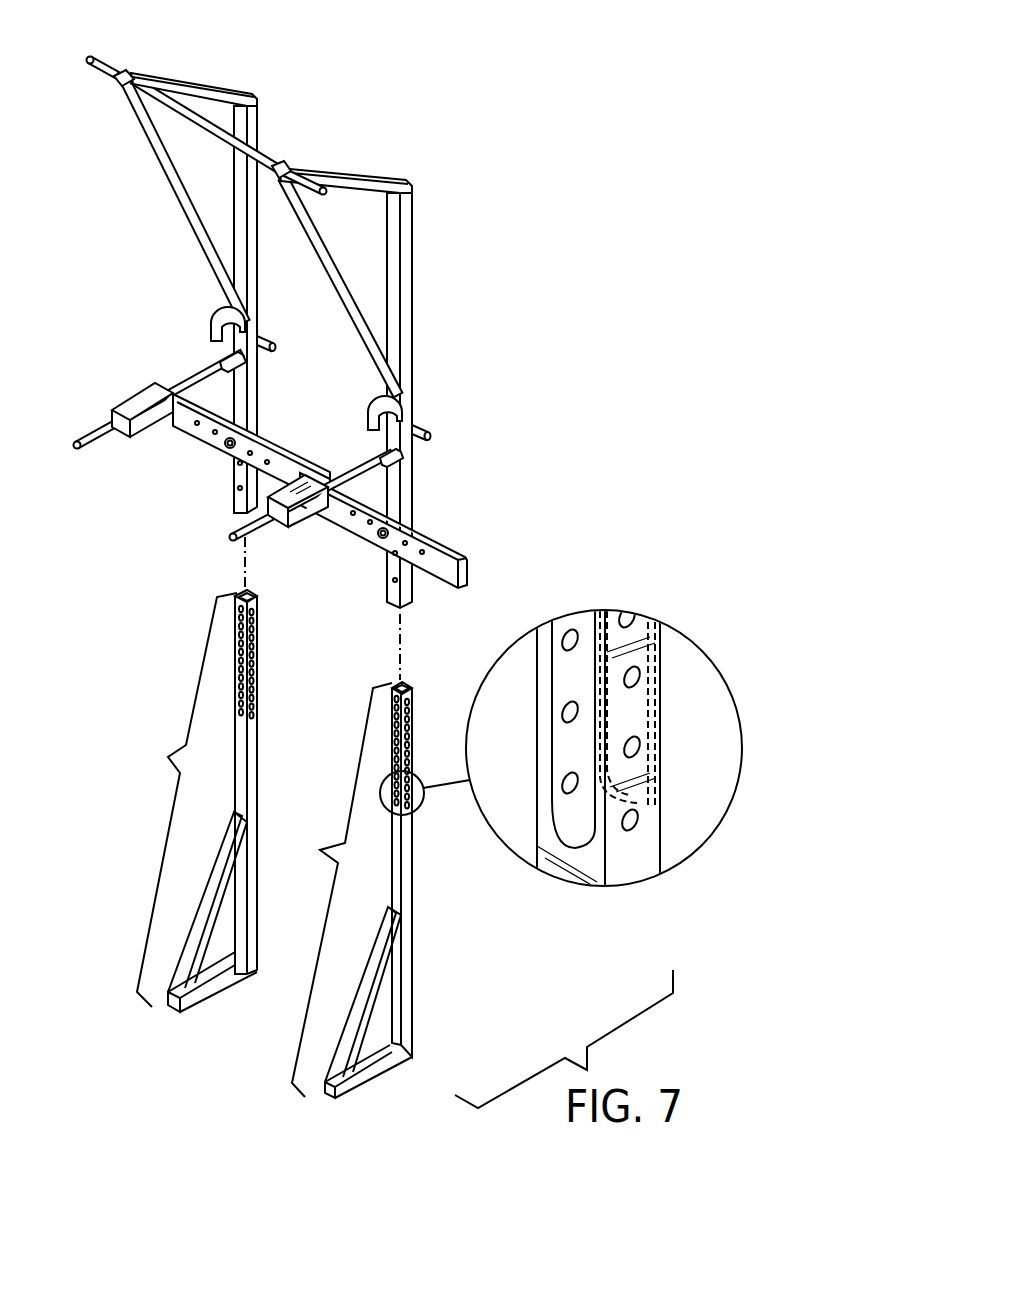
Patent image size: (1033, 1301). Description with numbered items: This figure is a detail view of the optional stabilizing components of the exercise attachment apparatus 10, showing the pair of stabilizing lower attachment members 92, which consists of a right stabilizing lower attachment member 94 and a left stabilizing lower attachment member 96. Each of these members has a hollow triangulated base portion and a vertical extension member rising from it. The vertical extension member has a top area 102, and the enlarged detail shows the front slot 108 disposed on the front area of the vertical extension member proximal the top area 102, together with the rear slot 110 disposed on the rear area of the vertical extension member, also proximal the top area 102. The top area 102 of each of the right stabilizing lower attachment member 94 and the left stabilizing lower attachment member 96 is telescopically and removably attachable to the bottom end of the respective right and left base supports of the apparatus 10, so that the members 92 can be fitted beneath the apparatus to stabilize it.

The exercise attachment apparatus 10 is at (614, 102).
The pair of stabilizing lower attachment members 92 is at (168, 757).
The right stabilizing lower attachment member 94 is at (403, 867).
The left stabilizing lower attachment member 96 is at (254, 769).
The top area 102 is at (403, 681).
The front slot 108 is at (573, 822).
The rear slot 110 is at (651, 708).